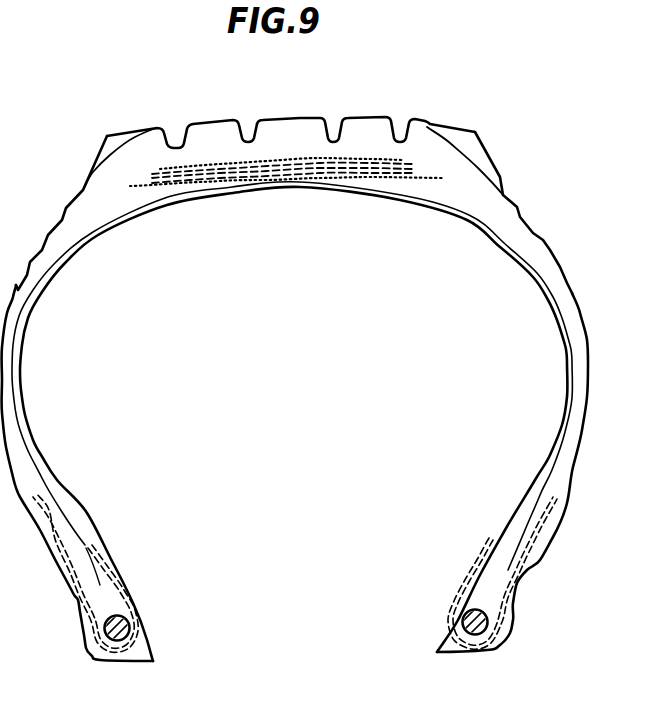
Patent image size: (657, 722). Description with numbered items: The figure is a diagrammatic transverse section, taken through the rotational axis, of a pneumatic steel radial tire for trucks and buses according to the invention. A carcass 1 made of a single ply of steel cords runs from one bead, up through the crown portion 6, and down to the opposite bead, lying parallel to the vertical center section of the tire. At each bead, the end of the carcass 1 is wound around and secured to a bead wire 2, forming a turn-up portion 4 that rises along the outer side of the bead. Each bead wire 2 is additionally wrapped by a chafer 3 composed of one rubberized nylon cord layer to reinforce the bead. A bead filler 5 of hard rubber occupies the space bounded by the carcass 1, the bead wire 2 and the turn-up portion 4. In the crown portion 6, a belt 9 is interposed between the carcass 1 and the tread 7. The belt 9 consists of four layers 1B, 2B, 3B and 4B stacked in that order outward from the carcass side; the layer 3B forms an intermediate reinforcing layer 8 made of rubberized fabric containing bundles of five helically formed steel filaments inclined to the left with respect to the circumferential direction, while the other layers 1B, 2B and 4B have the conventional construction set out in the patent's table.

The carcass 1 is at (490, 216).
The bead wire 2 is at (128, 618).
The chafer 3 is at (103, 562).
The turn-up portion 4 is at (95, 613).
The bead filler 5 is at (102, 603).
The crown portion 6 is at (309, 111).
The tread 7 is at (201, 130).
The intermediate reinforcing layer 8 is at (412, 171).
The belt 9 is at (266, 179).
The belt layer 1B is at (343, 187).
The belt layer 2B is at (365, 187).
The belt layer 3B is at (402, 187).
The belt layer 4B is at (370, 160).